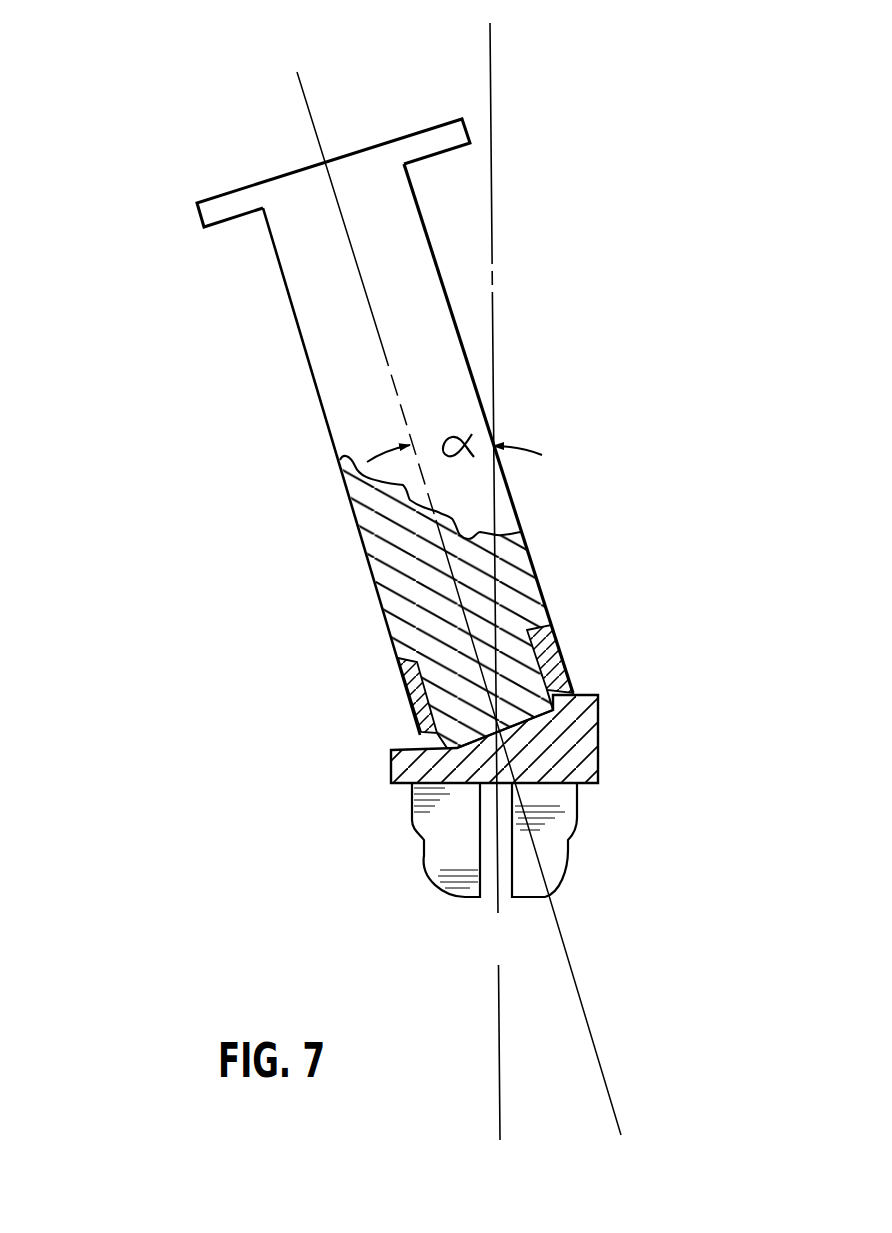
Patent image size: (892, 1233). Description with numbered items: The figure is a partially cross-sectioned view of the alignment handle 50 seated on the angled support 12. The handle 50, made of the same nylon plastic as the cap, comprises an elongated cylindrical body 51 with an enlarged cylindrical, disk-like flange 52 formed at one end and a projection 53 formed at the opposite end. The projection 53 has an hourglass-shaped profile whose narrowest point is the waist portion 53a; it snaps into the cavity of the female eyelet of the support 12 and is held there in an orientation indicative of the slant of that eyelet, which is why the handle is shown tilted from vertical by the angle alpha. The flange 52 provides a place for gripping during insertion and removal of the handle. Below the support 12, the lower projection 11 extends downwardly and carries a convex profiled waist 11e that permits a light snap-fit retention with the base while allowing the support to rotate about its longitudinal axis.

The alignment handle 50 is at (265, 375).
The elongated cylindrical body 51 is at (468, 360).
The enlarged cylindrical flange 52 is at (428, 127).
The projection 53 is at (470, 748).
The waist portion 53a is at (413, 717).
The support 12 is at (390, 768).
The convex profiled waist 11e is at (425, 840).
The lower projection 11 is at (568, 847).